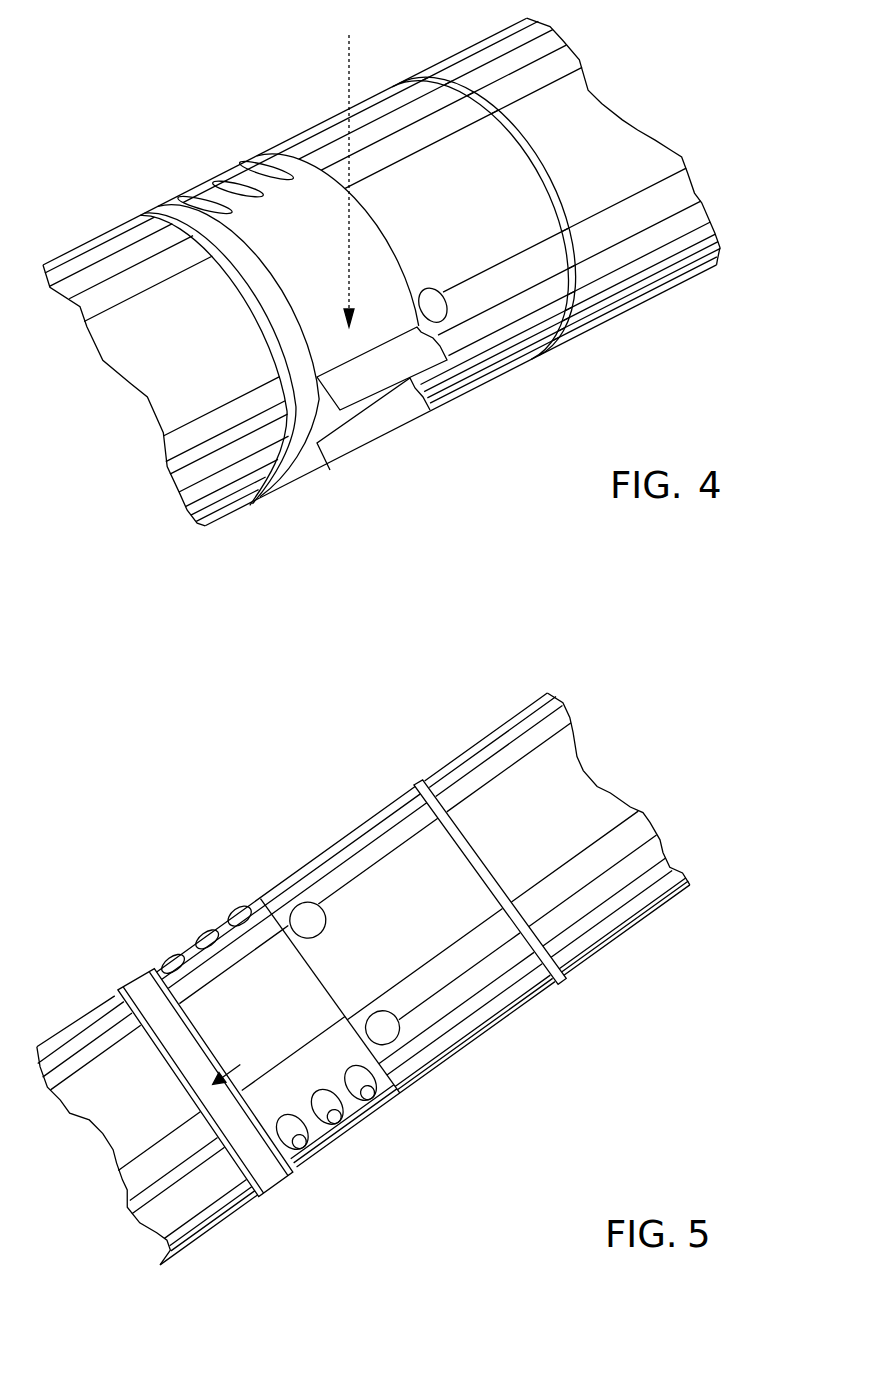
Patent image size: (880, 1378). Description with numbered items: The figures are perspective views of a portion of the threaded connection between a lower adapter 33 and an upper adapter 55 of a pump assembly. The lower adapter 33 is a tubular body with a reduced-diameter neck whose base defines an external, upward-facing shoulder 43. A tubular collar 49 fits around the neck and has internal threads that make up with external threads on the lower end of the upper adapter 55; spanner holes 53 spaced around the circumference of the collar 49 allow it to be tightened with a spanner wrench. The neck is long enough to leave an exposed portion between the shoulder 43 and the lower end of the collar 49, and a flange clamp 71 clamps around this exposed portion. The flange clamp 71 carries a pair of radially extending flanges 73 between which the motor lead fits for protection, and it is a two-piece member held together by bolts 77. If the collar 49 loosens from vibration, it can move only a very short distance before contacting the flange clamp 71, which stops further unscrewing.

In FIG. 4, the lower adapter 33 is at (160, 396).
In FIG. 5, the lower adapter 33 is at (160, 1262).
In FIG. 4, the lower adapter shoulder 43 is at (200, 283).
In FIG. 5, the lower adapter shoulder 43 is at (250, 1192).
In FIG. 4, the collar 49 is at (447, 378).
In FIG. 5, the collar 49 is at (490, 1037).
In FIG. 4, the spanner holes 53 is at (436, 308).
In FIG. 5, the spanner holes 53 is at (302, 912).
In FIG. 4, the upper adapter 55 is at (665, 255).
In FIG. 5, the upper adapter 55 is at (648, 903).
In FIG. 4, the flange clamp 71 is at (349, 72).
In FIG. 5, the flange clamp 71 is at (123, 1153).
In FIG. 4, the flanges 73 is at (374, 434).
In FIG. 5, the bolts 77 is at (387, 1110).